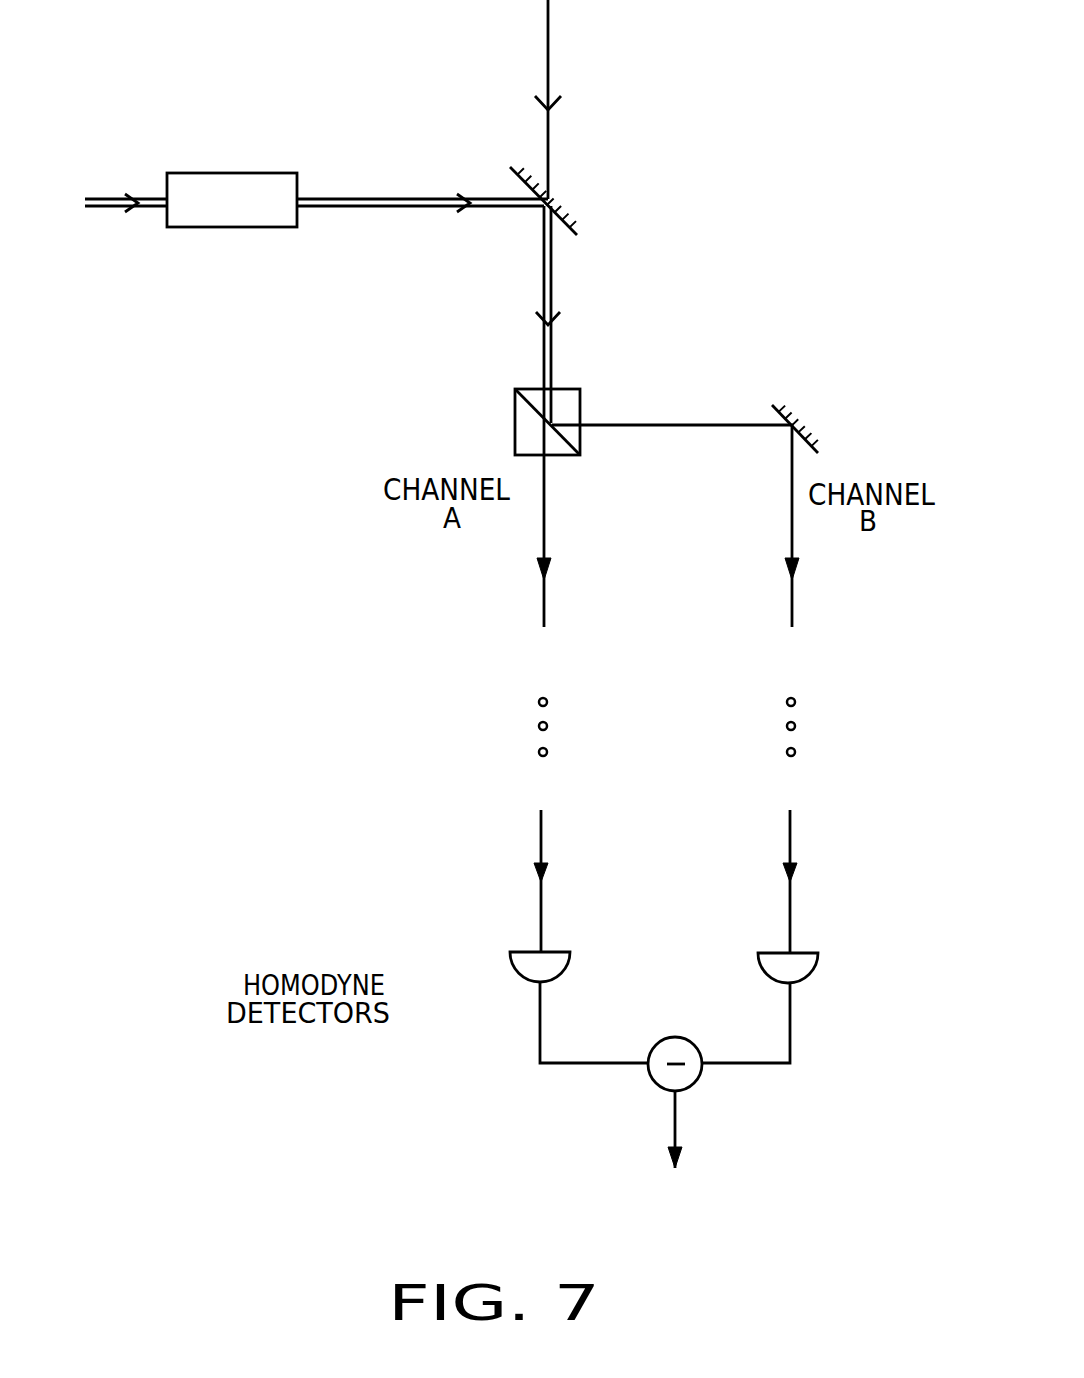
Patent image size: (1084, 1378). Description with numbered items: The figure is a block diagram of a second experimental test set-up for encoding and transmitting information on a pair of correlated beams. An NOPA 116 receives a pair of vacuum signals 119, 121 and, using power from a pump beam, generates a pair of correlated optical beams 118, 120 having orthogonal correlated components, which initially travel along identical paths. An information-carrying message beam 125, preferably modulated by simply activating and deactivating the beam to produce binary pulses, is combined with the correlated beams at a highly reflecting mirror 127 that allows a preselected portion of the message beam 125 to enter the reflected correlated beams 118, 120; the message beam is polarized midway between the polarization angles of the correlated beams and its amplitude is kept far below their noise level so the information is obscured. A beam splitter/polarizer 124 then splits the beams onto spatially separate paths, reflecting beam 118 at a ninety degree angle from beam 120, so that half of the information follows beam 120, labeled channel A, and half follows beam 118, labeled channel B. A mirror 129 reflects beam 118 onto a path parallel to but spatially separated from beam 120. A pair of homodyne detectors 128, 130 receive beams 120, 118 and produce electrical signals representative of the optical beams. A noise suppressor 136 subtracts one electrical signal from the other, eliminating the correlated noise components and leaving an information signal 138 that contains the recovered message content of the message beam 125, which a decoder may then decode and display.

The NOPA 116 is at (287, 222).
The correlated optical beam 118 is at (423, 200).
The vacuum signal 119 is at (98, 197).
The correlated optical beam 120 is at (400, 210).
The vacuum signal 121 is at (100, 208).
The beam splitter/polarizer 124 is at (523, 424).
The message beam 125 is at (548, 52).
The highly reflecting mirror 127 is at (573, 222).
The homodyne detector 128 is at (520, 963).
The mirror 129 is at (785, 408).
The homodyne detector 130 is at (800, 968).
The noise suppressor 136 is at (697, 1077).
The information signal 138 is at (676, 1122).